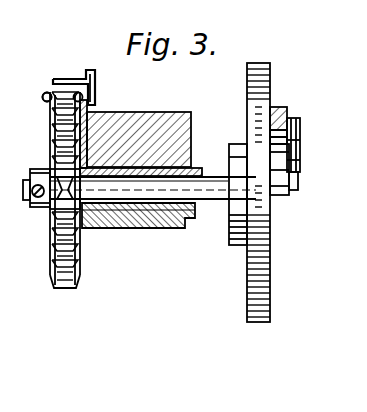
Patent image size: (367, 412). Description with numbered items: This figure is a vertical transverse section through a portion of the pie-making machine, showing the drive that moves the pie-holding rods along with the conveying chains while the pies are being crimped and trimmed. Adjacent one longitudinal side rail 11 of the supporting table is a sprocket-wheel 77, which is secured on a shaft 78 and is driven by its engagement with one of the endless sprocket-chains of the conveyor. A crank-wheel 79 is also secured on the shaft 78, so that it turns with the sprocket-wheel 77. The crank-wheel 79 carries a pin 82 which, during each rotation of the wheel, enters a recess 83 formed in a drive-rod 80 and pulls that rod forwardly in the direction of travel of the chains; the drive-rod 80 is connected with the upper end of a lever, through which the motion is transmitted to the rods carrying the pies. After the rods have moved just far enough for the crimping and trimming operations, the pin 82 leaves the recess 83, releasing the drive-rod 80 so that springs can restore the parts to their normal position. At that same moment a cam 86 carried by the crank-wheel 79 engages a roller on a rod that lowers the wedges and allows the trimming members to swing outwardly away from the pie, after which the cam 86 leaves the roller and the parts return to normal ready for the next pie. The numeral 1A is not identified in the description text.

The knurled bolt 1A is at (42, 97).
The sprocket-wheel 77 is at (54, 138).
The longitudinal side rail 11 is at (182, 110).
The shaft 78 is at (166, 228).
The cam 86 is at (230, 218).
The crank-wheel 79 is at (272, 87).
The drive-rod 80 is at (285, 119).
The pin 82 is at (249, 124).
The recess 83 is at (245, 162).